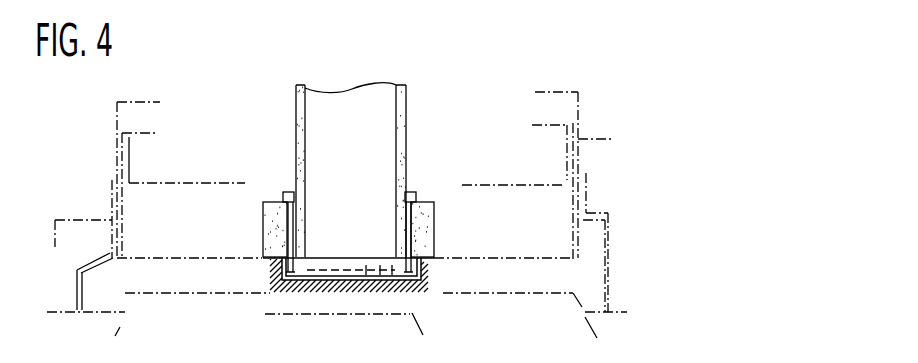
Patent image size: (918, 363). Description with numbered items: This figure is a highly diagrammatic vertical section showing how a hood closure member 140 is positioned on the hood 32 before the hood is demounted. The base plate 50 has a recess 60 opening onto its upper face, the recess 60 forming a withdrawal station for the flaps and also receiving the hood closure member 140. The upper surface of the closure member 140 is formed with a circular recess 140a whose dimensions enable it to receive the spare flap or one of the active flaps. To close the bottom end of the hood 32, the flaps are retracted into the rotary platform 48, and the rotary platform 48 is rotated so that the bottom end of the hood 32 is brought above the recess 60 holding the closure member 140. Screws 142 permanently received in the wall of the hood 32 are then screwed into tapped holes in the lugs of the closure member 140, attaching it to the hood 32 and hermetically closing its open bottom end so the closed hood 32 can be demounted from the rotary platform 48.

The hood 32 is at (406, 110).
The rotary platform 48 is at (345, 220).
The base plate 50 is at (182, 276).
The recess 60 is at (260, 333).
The hood closure member 140 is at (428, 270).
The circular recess 140a is at (366, 262).
The screws 142 is at (287, 222).